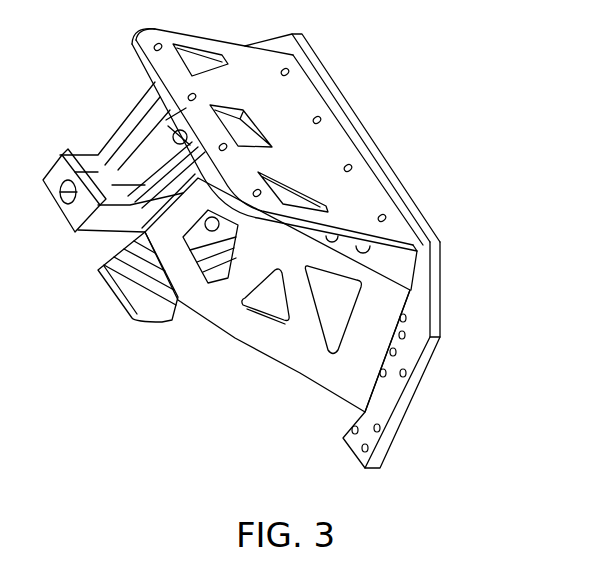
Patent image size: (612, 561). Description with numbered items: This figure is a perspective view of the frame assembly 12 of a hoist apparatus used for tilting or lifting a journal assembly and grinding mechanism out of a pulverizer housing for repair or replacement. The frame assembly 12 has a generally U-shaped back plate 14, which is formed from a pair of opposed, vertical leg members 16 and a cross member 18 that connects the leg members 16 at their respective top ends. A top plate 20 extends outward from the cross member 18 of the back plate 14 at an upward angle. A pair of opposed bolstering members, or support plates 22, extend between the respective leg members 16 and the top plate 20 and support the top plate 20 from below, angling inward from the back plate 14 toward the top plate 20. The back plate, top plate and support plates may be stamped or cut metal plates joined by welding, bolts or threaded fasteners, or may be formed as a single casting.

The frame assembly 12 is at (290, 253).
The back plate 14 is at (391, 256).
The leg member 16 is at (387, 398).
The cross member 18 is at (393, 183).
The top plate 20 is at (300, 100).
The support plate 22 is at (257, 333).